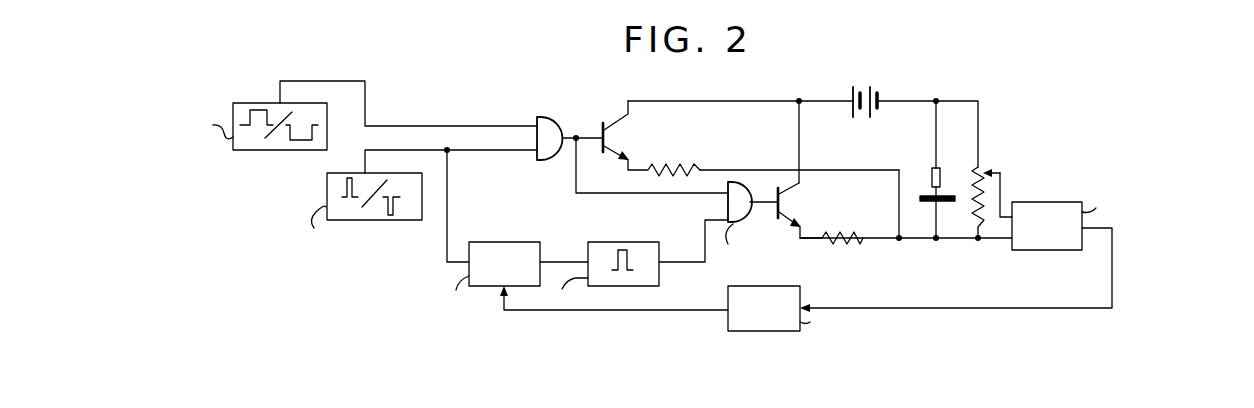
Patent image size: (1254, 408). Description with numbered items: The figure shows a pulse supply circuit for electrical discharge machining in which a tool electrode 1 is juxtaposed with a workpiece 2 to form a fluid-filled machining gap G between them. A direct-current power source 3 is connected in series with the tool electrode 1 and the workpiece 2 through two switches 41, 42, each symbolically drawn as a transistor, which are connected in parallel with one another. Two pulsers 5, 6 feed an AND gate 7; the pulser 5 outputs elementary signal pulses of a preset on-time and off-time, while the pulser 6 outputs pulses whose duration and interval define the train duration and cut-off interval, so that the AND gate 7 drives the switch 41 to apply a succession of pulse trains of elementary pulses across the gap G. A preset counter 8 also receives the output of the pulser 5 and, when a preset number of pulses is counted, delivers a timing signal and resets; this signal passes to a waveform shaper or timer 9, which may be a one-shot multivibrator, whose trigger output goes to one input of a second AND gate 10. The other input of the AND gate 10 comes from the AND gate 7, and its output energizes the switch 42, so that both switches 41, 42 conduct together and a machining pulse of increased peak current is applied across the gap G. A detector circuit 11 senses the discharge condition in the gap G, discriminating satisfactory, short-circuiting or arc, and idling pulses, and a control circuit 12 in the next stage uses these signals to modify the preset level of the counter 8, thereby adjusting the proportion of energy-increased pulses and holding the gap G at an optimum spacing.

The tool electrode 1 is at (944, 178).
The workpiece 2 is at (943, 203).
The direct-current power source 3 is at (861, 85).
The pulser 5 is at (405, 221).
The pulser 6 is at (255, 150).
The AND gate 7 is at (545, 115).
The preset counter 8 is at (497, 242).
The waveform shaper or timer 9 is at (612, 242).
The AND gate 10 is at (752, 213).
The detector circuit 11 is at (1040, 202).
The control circuit 12 is at (752, 332).
The switch 41 is at (612, 140).
The switch 42 is at (787, 206).
The machining gap G is at (926, 192).